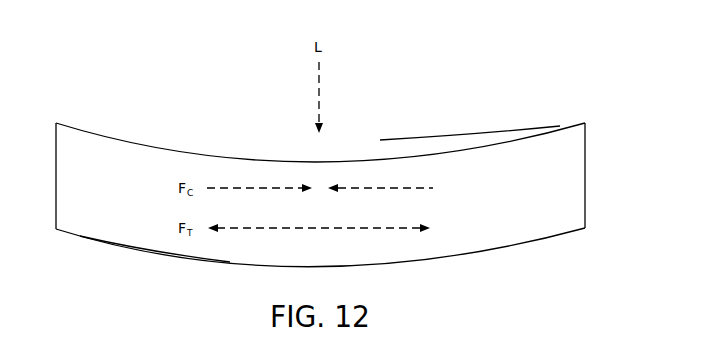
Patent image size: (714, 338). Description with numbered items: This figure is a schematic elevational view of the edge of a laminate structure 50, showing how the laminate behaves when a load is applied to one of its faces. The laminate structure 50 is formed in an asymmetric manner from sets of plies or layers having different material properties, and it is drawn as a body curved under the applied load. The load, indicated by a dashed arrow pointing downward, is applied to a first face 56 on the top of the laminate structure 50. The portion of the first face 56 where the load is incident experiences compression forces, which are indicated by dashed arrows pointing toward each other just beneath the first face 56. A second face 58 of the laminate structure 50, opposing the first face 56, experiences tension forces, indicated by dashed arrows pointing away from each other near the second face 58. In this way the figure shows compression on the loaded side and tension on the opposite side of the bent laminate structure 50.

The laminate structure 50 is at (524, 80).
The first face 56 is at (480, 136).
The second face 58 is at (122, 260).